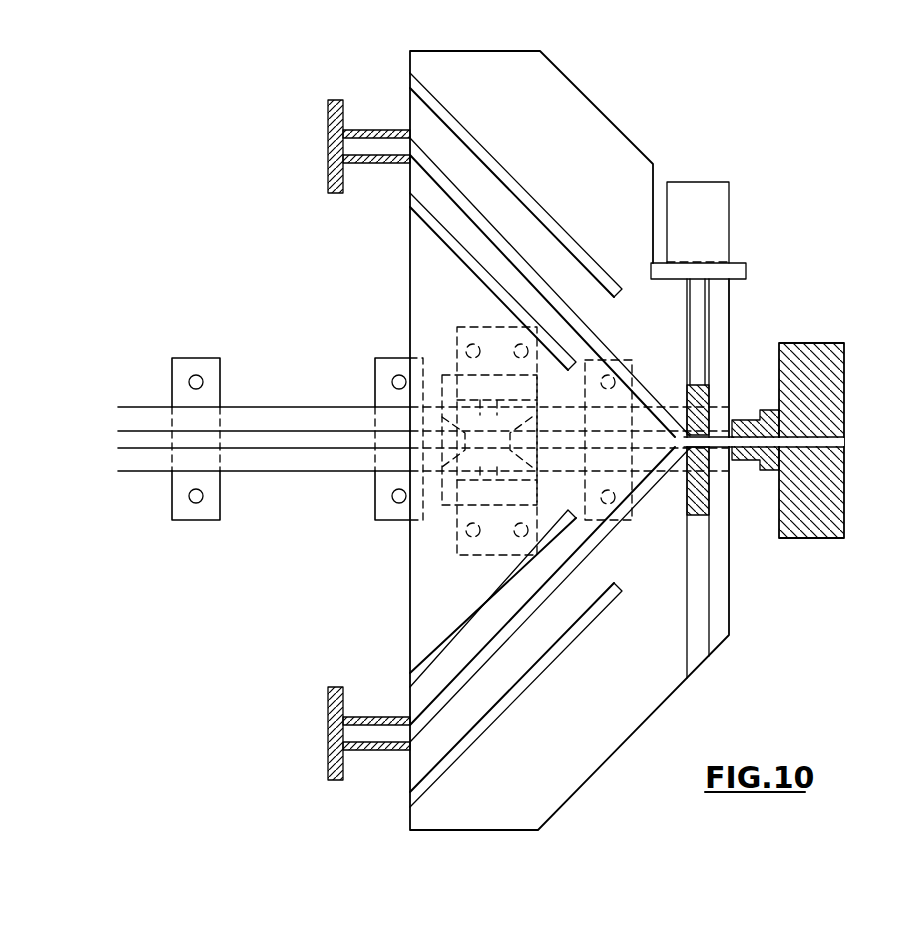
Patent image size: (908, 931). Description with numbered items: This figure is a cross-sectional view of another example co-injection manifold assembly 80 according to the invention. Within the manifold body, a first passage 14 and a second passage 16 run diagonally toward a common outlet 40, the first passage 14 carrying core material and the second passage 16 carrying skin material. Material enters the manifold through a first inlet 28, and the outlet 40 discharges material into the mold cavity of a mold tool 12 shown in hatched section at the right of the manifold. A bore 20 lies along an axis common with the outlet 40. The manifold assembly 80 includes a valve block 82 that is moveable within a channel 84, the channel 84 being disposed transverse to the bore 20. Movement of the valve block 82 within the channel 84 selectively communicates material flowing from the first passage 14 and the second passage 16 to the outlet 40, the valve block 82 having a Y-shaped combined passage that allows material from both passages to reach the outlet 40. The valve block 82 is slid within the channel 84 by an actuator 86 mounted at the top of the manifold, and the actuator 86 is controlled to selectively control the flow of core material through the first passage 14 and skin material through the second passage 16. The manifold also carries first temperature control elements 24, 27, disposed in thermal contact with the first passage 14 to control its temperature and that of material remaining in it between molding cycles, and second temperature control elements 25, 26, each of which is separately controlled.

The mold tool 12 is at (830, 520).
The first passage 14 is at (495, 645).
The second passage 16 is at (573, 310).
The bore 20 is at (737, 413).
The first temperature control element 24 is at (572, 640).
The second temperature control element 25 is at (475, 270).
The second temperature control element 26 is at (512, 183).
The first temperature control element 27 is at (437, 655).
The first inlet 28 is at (332, 148).
The outlet 40 is at (783, 437).
The manifold assembly 80 is at (597, 735).
The valve block 82 is at (697, 497).
The channel 84 is at (697, 618).
The actuator 86 is at (710, 242).